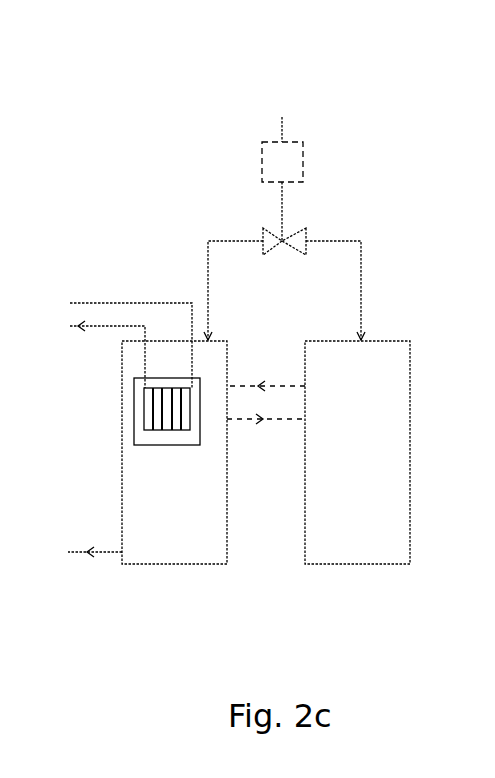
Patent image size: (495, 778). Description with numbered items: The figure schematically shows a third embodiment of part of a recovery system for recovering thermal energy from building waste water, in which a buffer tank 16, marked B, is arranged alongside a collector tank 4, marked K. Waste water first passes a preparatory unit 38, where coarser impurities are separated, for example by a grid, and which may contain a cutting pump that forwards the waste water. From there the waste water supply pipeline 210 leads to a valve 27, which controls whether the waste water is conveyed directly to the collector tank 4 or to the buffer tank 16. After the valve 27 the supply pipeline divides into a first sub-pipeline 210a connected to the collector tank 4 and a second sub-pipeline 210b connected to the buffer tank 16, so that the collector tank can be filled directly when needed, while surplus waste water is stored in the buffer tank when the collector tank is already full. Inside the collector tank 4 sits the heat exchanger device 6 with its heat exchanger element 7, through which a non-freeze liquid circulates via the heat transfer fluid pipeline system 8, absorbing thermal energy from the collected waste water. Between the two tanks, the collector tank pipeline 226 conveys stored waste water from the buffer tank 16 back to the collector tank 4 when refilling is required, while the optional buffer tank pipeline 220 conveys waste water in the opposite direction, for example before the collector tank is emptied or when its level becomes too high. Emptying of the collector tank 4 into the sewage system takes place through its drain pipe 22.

The preparatory unit 38 is at (276, 137).
The waste water supply pipeline 210 is at (278, 226).
The valve 27 is at (308, 227).
The first sub-pipeline 210a is at (206, 249).
The second sub-pipeline 210b is at (363, 248).
The heat transfer fluid pipeline system 8 is at (78, 301).
The collector tank 4 is at (121, 493).
The heat exchanger device 6 is at (133, 407).
The heat exchanger element 7 is at (177, 430).
The collector tank pipeline 226 is at (236, 381).
The buffer tank pipeline 220 is at (285, 425).
The buffer tank 16 is at (303, 558).
The drain pipe 22 is at (106, 556).